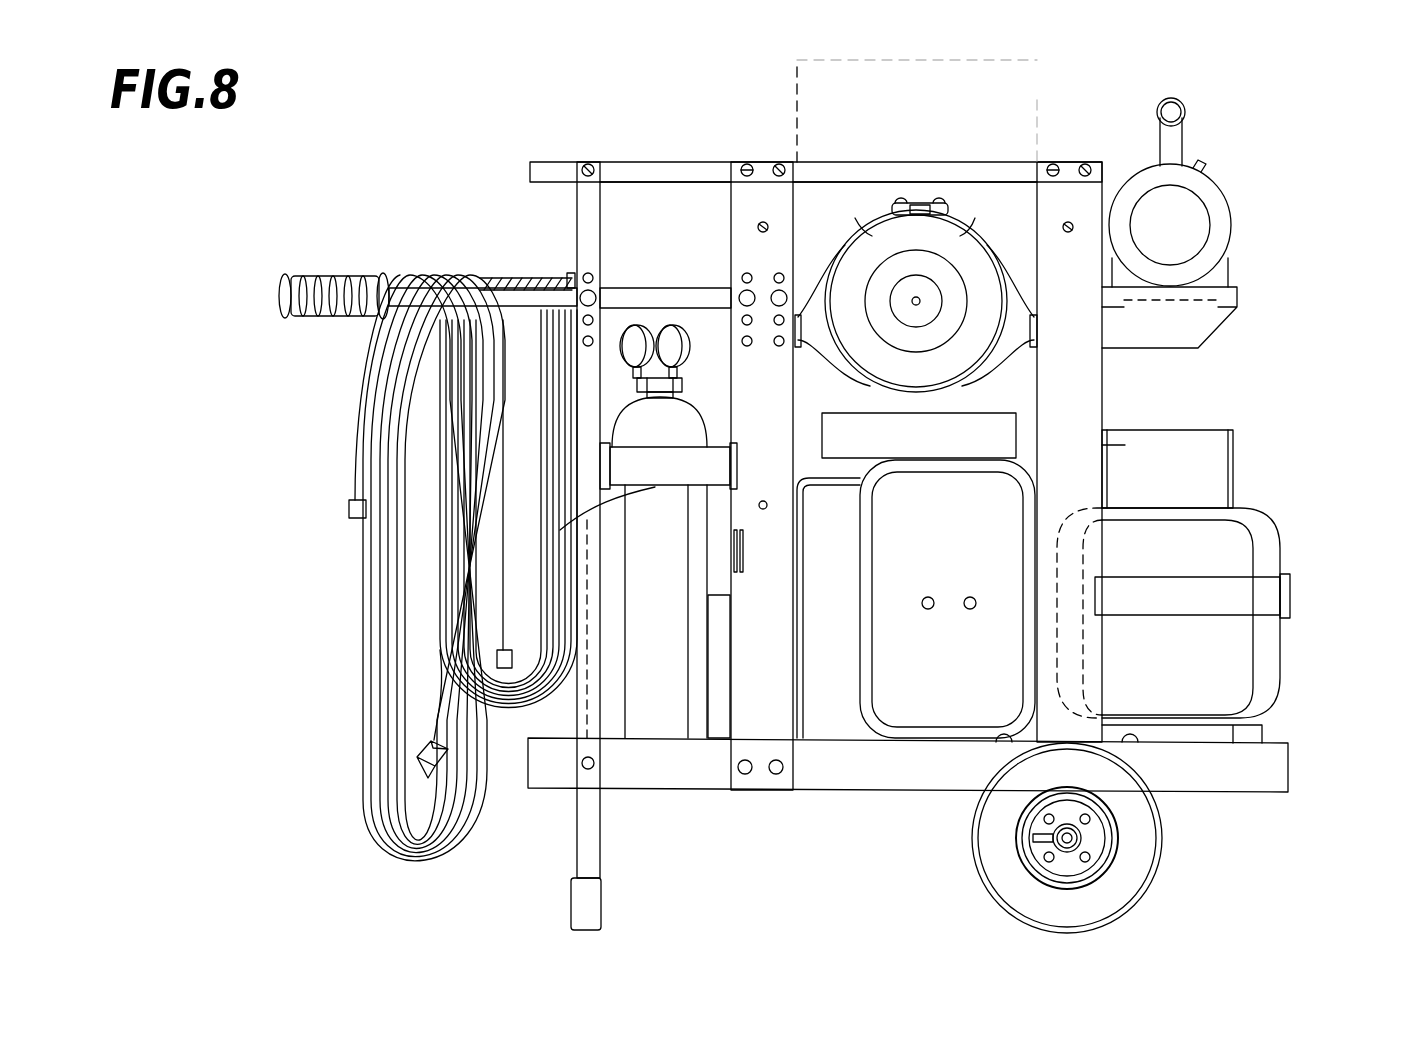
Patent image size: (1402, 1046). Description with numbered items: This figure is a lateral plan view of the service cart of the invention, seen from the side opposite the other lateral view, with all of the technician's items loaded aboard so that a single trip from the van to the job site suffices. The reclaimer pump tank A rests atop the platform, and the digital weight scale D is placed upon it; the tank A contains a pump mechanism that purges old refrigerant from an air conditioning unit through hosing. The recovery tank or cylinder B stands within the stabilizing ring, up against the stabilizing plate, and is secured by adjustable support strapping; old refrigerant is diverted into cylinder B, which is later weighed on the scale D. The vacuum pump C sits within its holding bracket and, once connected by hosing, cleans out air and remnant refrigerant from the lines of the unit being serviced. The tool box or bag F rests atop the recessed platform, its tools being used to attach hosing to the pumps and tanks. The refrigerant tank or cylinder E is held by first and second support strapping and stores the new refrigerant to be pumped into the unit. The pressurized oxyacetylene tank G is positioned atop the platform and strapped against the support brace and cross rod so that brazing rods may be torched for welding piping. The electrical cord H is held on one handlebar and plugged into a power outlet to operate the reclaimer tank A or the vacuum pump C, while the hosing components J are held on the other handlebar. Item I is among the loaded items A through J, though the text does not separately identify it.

The reclaimer pump tank A is at (887, 712).
The recovery tank or cylinder B is at (1262, 545).
The vacuum pump C is at (1210, 190).
The digital weight scale D is at (965, 420).
The refrigerant tank or cylinder E is at (860, 245).
The tool box or bag F is at (806, 80).
The pressurized oxyacetylene tank G is at (633, 420).
The electrical cord H is at (435, 617).
The hose connector I is at (570, 273).
The hosing components J is at (355, 464).